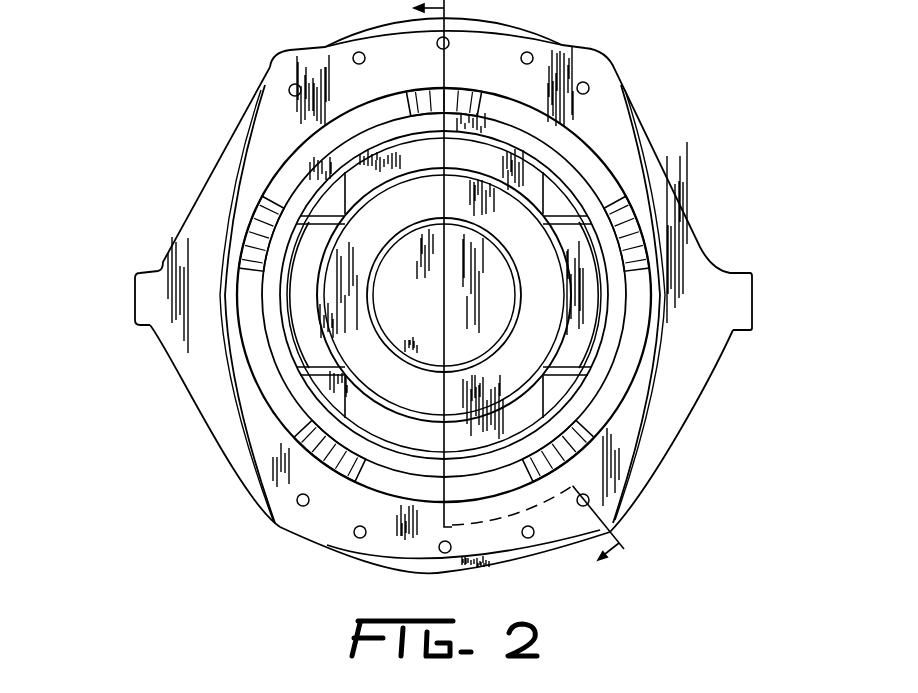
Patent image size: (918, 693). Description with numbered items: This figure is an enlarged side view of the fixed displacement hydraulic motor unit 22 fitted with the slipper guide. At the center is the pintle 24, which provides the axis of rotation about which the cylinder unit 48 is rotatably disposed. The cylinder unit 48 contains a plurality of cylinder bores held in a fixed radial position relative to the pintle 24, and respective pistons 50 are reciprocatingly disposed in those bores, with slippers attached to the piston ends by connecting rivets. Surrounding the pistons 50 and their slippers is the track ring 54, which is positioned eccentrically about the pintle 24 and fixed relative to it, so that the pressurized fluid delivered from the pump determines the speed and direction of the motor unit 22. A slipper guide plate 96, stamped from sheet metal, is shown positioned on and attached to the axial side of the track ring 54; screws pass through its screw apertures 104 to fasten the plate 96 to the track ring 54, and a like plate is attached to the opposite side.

The motor unit 22 is at (126, 238).
The pintle 24 is at (425, 311).
The cylinder unit 48 is at (276, 360).
The pistons 50 is at (473, 90).
The track ring 54 is at (688, 377).
The slipper guide plate 96 is at (613, 137).
The screw apertures 104 is at (589, 86).